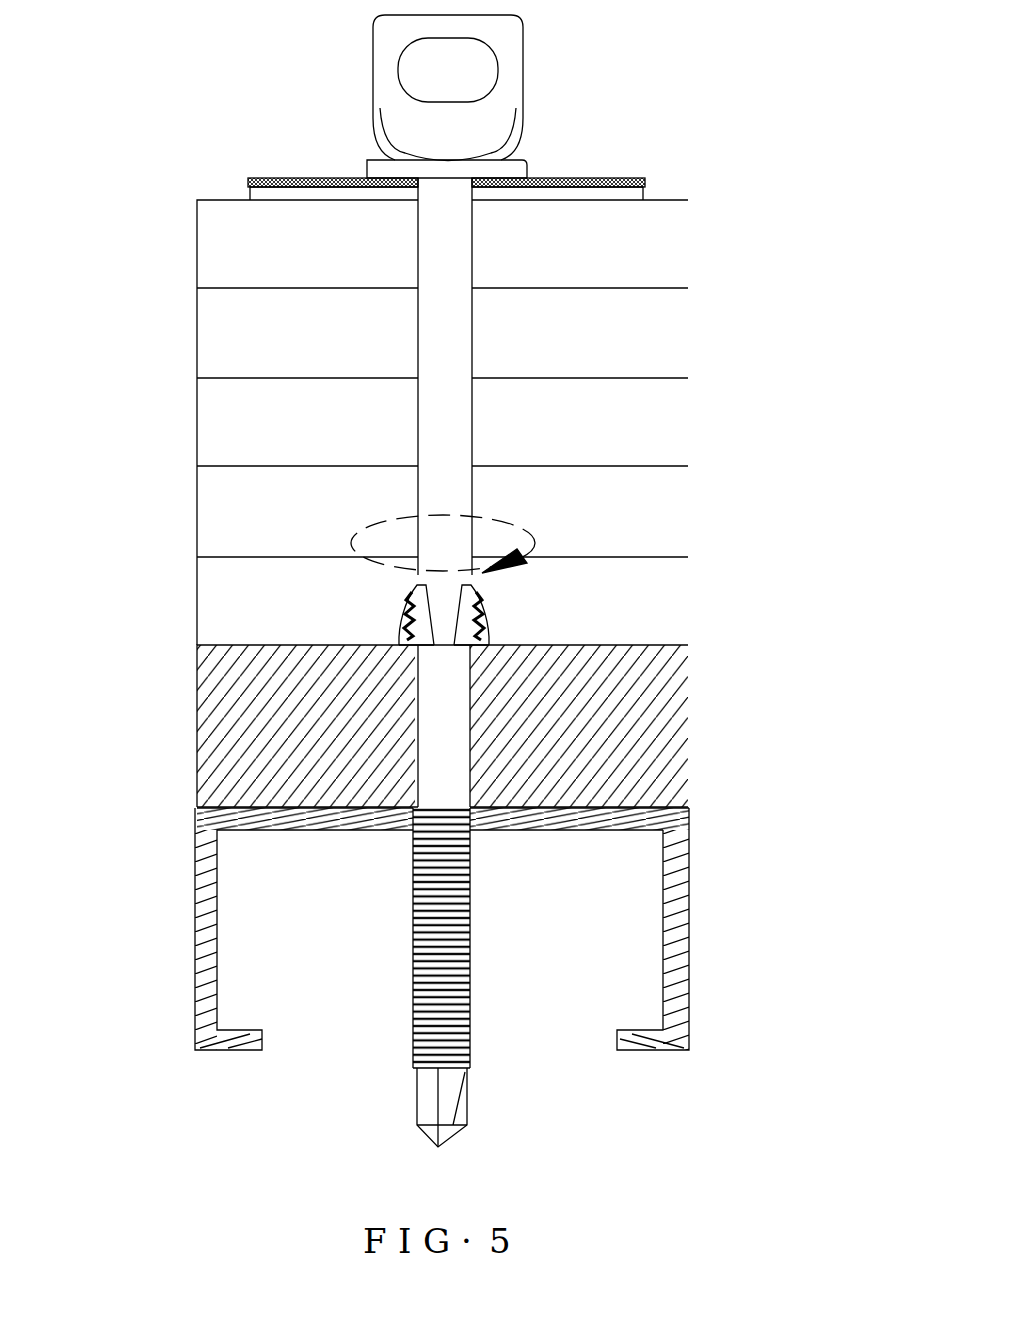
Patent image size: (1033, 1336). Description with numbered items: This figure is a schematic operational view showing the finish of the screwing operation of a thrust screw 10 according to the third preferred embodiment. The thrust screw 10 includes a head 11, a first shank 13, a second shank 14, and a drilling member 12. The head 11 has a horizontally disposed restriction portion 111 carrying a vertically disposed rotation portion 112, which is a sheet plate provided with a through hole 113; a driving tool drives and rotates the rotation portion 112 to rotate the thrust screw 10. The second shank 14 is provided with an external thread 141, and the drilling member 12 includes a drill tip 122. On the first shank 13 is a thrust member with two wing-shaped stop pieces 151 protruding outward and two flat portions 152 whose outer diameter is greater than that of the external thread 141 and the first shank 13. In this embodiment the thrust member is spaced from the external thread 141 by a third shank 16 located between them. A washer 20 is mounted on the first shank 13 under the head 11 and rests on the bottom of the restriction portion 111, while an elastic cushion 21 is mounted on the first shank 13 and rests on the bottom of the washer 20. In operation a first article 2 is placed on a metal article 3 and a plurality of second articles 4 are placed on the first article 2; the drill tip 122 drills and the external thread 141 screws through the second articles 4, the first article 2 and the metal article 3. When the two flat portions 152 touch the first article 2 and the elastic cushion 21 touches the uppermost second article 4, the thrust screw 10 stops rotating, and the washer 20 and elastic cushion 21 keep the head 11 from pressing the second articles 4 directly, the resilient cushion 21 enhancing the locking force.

The thrust screw 10 is at (622, 52).
The head 11 is at (451, 96).
The restriction portion 111 is at (377, 167).
The rotation portion 112 is at (388, 31).
The through hole 113 is at (418, 72).
The drilling member 12 is at (439, 1109).
The drill tip 122 is at (430, 1095).
The first shank 13 is at (462, 336).
The second shank 14 is at (446, 938).
The external thread 141 is at (415, 942).
The wing-shaped stop pieces 151 is at (400, 622).
The flat portions 152 is at (402, 647).
The third shank 16 is at (460, 729).
The first article 2 is at (212, 732).
The washer 20 is at (625, 183).
The elastic cushion 21 is at (638, 197).
The metal article 3 is at (208, 927).
The second articles 4 is at (212, 444).